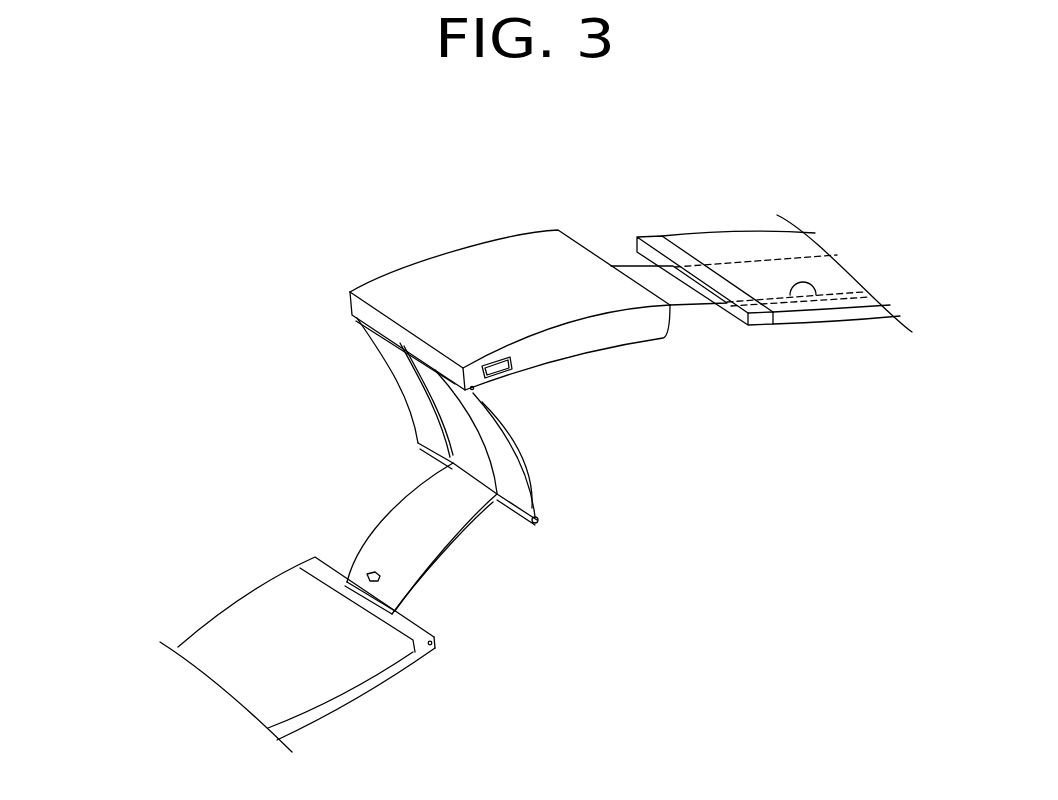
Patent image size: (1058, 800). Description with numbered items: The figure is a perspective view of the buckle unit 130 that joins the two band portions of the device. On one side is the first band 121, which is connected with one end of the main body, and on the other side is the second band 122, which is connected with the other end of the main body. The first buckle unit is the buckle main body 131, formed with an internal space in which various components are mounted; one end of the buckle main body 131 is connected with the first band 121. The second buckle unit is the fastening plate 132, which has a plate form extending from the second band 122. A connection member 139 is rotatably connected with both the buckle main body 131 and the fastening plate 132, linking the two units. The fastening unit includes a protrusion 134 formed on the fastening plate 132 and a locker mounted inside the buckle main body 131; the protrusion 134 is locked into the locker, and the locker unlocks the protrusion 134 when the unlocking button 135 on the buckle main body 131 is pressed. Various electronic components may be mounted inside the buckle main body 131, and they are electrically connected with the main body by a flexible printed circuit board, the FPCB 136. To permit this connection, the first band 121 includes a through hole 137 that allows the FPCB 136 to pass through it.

The first band 121 is at (713, 240).
The second band 122 is at (242, 628).
The connection unit 130 is at (488, 224).
The buckle main body 131 is at (418, 282).
The fastening plate 132 is at (423, 522).
The protrusion 134 is at (368, 573).
The unlocking button 135 is at (505, 372).
The flexible printed circuit board (FPCB) 136 is at (683, 293).
The through hole 137 is at (829, 297).
The connection member 139 is at (410, 383).